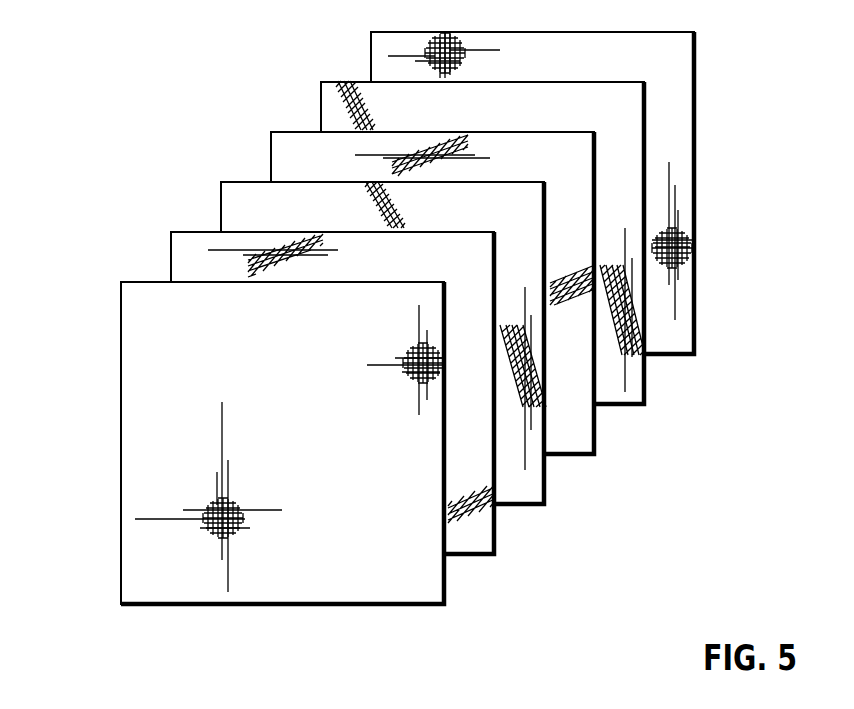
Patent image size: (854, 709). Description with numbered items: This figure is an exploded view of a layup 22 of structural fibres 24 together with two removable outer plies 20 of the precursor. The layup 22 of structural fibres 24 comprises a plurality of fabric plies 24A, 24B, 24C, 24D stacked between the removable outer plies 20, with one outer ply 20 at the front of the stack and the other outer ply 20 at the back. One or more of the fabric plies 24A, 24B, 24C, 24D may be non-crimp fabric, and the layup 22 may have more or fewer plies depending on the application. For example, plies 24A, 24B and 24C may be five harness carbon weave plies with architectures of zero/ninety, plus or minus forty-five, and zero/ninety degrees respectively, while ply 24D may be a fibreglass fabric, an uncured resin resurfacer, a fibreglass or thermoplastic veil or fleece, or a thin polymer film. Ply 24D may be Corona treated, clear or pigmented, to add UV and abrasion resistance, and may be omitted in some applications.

The removable outer ply 20 is at (696, 118).
The layup 22 is at (393, 305).
The structural fibres 24 is at (393, 305).
The fabric ply 24A is at (637, 117).
The fabric ply 24B is at (582, 167).
The fabric ply 24C is at (530, 217).
The fabric ply 24D is at (480, 267).